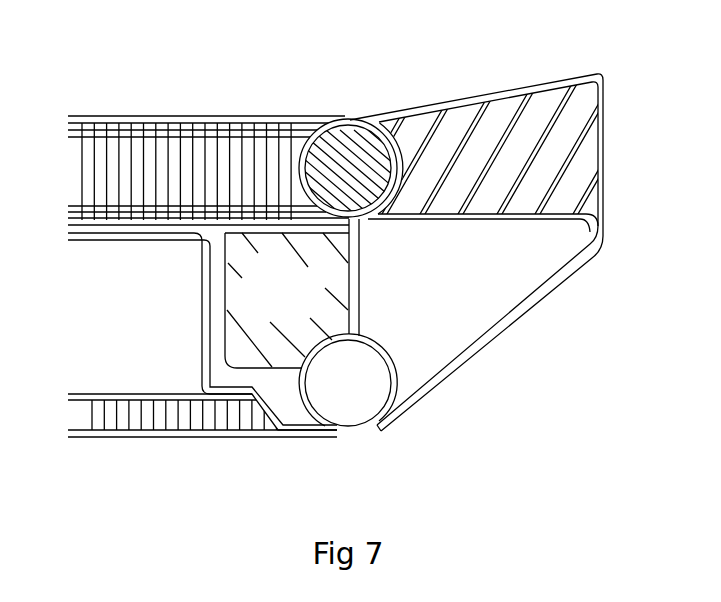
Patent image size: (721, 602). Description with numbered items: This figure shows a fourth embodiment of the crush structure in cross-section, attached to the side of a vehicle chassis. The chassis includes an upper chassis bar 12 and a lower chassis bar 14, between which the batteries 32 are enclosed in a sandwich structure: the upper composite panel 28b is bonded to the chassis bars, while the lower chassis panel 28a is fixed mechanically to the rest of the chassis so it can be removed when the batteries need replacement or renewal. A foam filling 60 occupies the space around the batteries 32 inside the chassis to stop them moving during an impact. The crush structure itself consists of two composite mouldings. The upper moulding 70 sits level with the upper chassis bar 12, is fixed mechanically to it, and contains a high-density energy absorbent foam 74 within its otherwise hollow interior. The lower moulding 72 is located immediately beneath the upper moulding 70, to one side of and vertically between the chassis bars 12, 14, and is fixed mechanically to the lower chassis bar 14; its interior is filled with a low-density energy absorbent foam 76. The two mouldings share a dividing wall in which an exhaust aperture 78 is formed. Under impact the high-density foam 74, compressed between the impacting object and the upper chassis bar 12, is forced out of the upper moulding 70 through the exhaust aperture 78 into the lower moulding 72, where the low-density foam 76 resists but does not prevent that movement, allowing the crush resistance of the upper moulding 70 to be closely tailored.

The upper chassis bar 12 is at (338, 162).
The lower chassis bar 14 is at (352, 392).
The lower chassis panel 28a is at (149, 414).
The upper composite panel 28b is at (193, 170).
The batteries 32 is at (140, 318).
The foam filling 60 is at (272, 322).
The upper moulding 70 is at (604, 140).
The lower moulding 72 is at (498, 330).
The high-density energy absorbent foam 74 is at (510, 140).
The low-density energy absorbent foam 76 is at (425, 320).
The exhaust aperture 78 is at (423, 220).